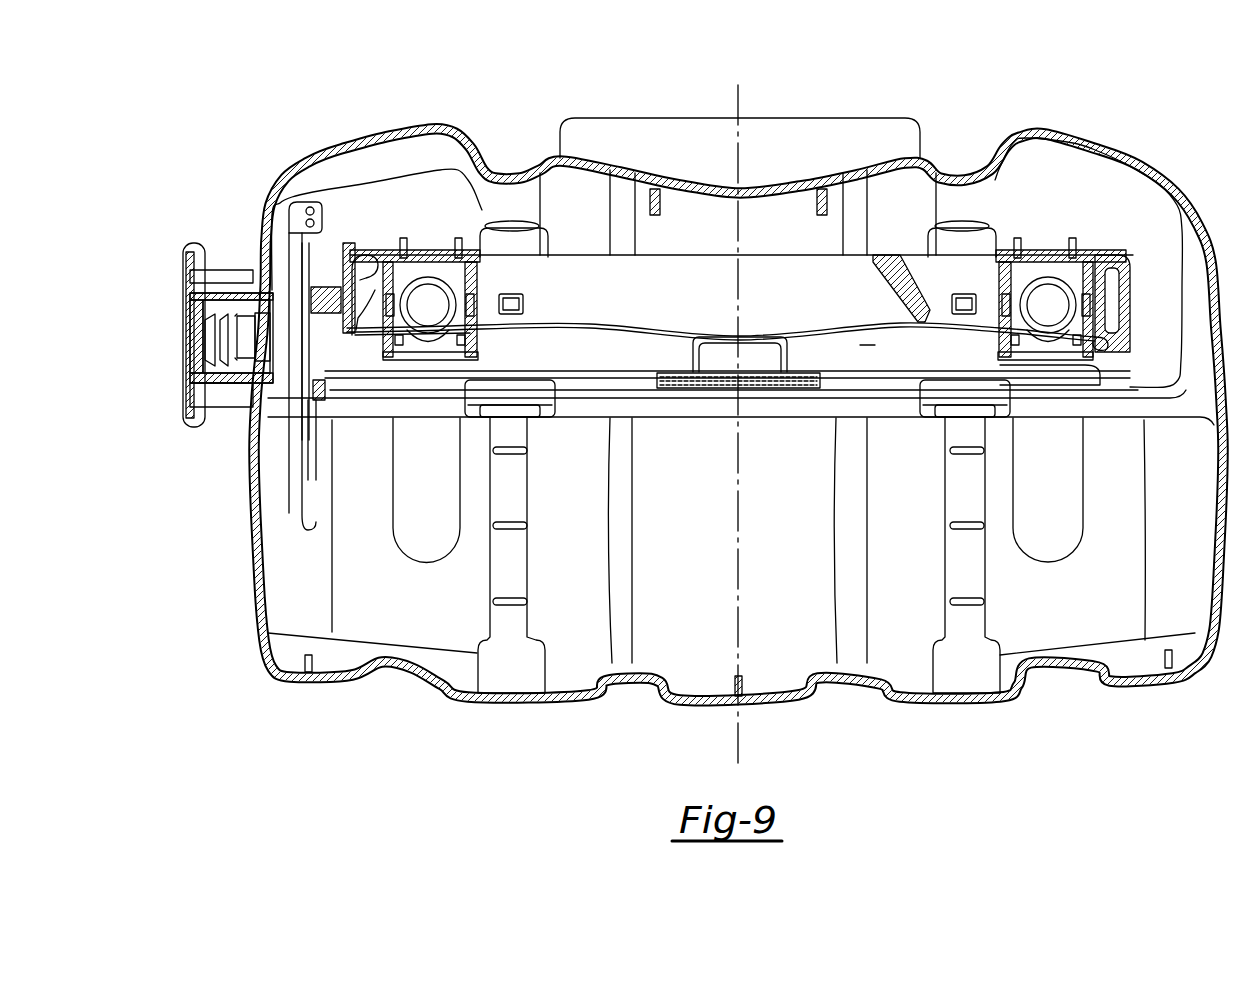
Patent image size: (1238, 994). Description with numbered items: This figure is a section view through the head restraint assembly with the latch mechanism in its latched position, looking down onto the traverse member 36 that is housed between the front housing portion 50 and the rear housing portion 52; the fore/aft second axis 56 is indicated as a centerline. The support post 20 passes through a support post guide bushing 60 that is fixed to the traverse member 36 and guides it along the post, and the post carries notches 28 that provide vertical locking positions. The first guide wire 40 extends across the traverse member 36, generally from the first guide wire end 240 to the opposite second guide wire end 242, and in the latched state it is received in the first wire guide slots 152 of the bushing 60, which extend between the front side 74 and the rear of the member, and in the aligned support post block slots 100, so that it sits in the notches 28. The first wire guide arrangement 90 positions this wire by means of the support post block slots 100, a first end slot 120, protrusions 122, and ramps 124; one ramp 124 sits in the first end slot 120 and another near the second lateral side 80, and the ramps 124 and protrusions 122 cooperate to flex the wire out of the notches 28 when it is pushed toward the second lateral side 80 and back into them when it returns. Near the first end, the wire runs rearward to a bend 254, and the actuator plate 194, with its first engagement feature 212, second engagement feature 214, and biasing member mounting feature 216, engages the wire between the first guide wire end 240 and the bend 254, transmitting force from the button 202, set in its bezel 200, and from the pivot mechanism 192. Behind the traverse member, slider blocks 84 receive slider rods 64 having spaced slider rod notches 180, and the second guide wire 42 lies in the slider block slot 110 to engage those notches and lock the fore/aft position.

The support post 20 is at (437, 274).
The notch 28 is at (426, 346).
The traverse member 36 is at (714, 300).
The first guide wire 40 is at (791, 317).
The second guide wire 42 is at (862, 343).
The front housing portion 50 is at (730, 117).
The rear housing portion 52 is at (718, 703).
The second axis 56 is at (740, 92).
The support post guide bushing 60 is at (457, 293).
The slider rod 64 is at (533, 544).
The front side 74 is at (587, 253).
The second lateral side 80 is at (1130, 267).
The slider block 84 is at (547, 393).
The first wire guide arrangement 90 is at (678, 318).
The support post block slot 100 is at (464, 354).
The slider block slot 110 is at (546, 362).
The first end slot 120 is at (366, 345).
The protrusion 122 is at (692, 350).
The ramp 124 is at (372, 276).
The first wire guide slot 152 is at (474, 326).
The slider rod notch 180 is at (510, 522).
The pivot mechanism 192 is at (289, 217).
The actuator plate 194 is at (322, 430).
The bezel 200 is at (192, 274).
The button 202 is at (190, 296).
The first engagement feature 212 is at (347, 292).
The second engagement feature 214 is at (325, 413).
The biasing member mounting feature 216 is at (325, 397).
The first guide wire end 240 is at (370, 266).
The second guide wire end 242 is at (1110, 333).
The bend 254 is at (350, 322).